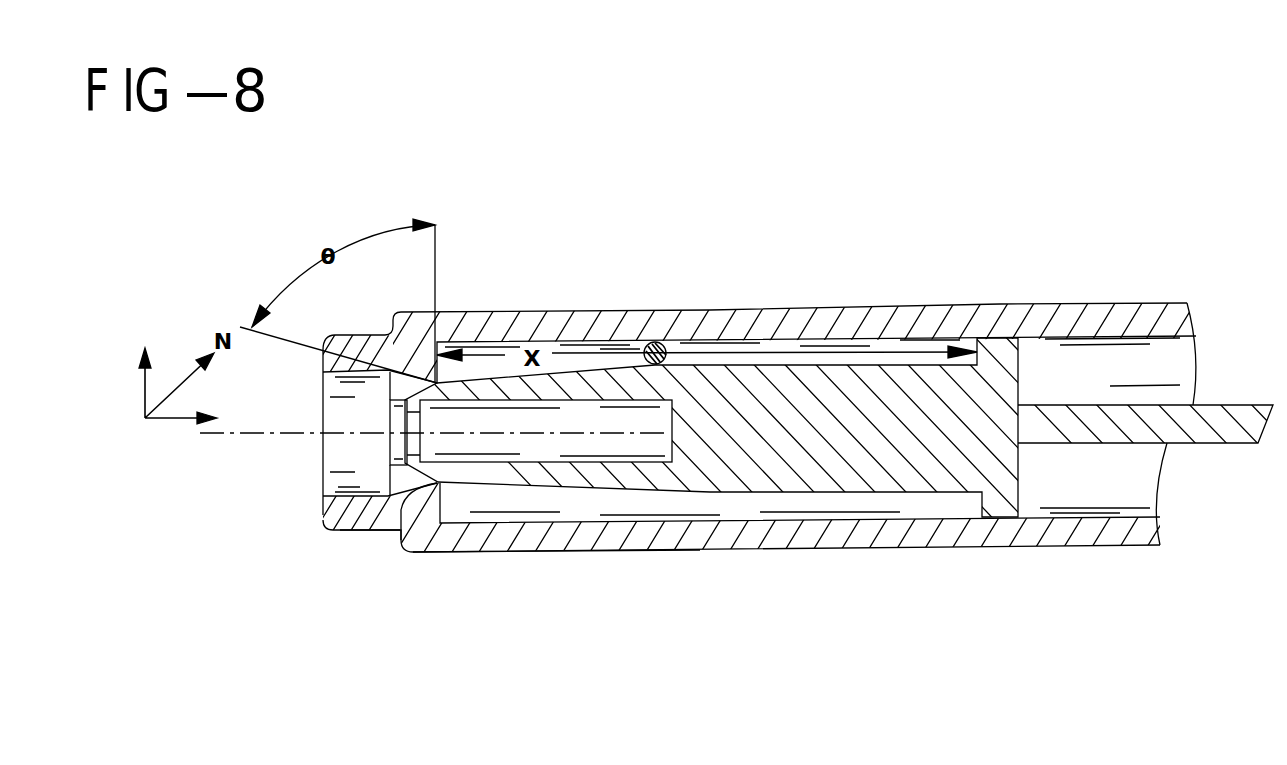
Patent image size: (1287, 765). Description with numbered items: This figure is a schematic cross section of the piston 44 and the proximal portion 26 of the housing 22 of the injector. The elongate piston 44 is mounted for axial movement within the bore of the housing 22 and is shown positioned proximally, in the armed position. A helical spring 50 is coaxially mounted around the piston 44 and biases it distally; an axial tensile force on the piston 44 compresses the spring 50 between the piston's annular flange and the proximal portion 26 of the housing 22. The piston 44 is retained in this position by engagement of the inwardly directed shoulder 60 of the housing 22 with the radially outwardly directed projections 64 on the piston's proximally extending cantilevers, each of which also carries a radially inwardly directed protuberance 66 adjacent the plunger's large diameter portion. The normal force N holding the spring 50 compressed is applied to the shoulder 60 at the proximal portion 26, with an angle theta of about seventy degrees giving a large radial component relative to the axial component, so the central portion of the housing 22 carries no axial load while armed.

The housing 22 is at (580, 312).
The proximal end 26 is at (433, 553).
The piston 44 is at (810, 477).
The helical spring 50 is at (656, 342).
The shoulder 60 is at (437, 498).
The projection 64 is at (395, 530).
The protuberance 66 is at (418, 453).